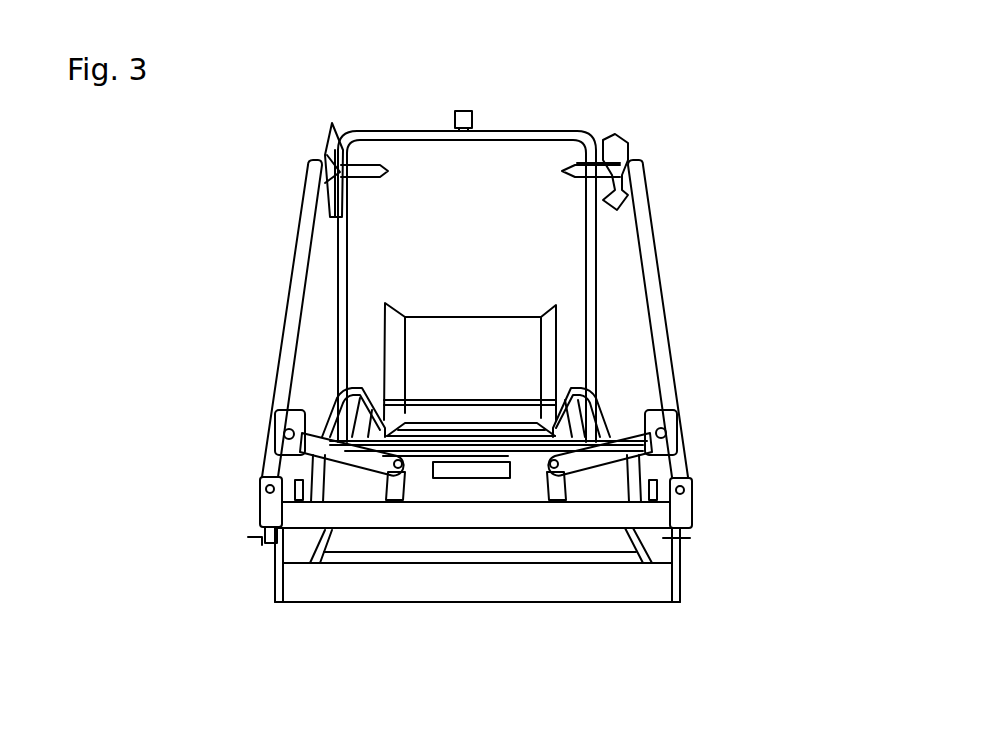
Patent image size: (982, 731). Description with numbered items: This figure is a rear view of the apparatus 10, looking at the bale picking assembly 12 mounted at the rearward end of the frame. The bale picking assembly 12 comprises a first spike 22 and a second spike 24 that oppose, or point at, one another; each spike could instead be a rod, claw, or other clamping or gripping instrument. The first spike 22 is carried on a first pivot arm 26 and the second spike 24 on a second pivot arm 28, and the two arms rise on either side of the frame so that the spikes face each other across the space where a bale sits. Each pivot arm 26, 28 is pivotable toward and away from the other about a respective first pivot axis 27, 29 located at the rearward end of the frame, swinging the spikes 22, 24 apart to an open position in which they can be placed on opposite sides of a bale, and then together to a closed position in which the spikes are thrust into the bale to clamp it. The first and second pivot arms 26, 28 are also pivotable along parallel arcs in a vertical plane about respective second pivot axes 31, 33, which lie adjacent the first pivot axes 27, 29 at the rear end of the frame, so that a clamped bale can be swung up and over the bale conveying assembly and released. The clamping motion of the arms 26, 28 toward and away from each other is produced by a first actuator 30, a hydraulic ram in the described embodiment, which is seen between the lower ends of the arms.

The apparatus 10 is at (748, 124).
The bale picking assembly 12 is at (207, 395).
The first spike 22 is at (577, 132).
The second spike 24 is at (361, 163).
The first pivot arm 26 is at (664, 305).
The first pivot axis 27 is at (683, 490).
The second pivot arm 28 is at (293, 300).
The first pivot axis 29 is at (267, 490).
The first actuator 30 is at (467, 468).
The second pivot axis 31 is at (700, 540).
The second pivot axis 33 is at (254, 538).